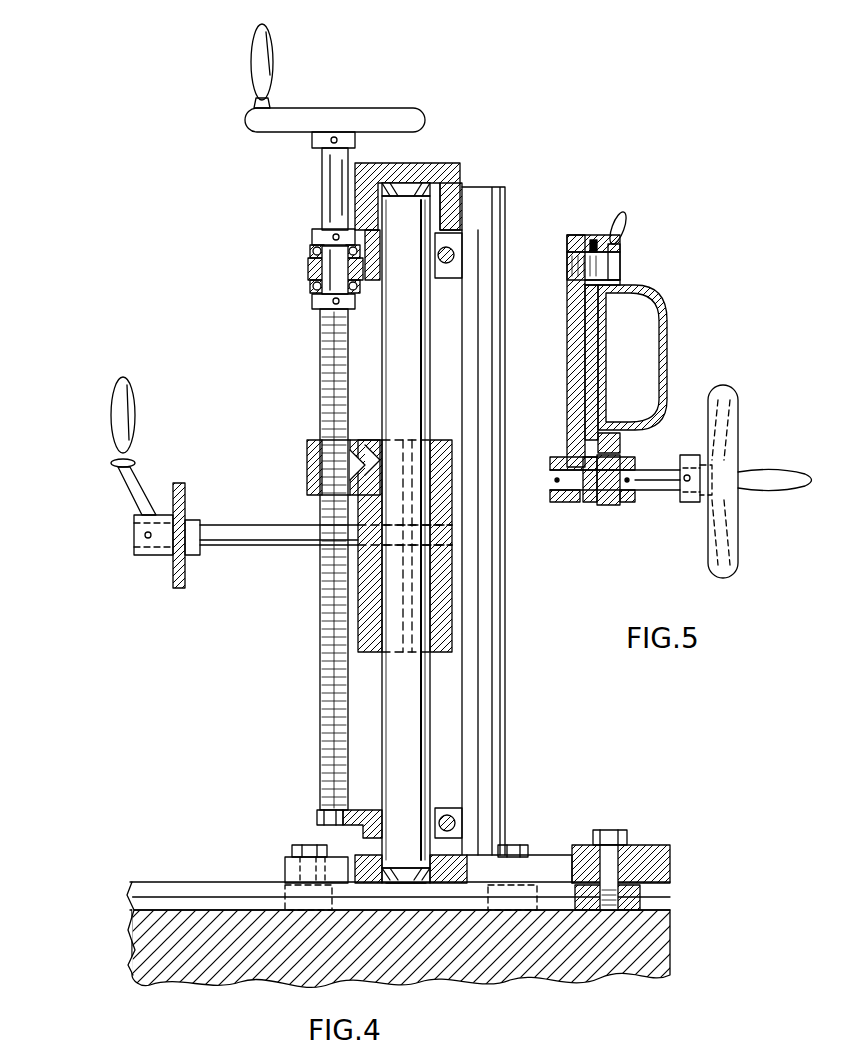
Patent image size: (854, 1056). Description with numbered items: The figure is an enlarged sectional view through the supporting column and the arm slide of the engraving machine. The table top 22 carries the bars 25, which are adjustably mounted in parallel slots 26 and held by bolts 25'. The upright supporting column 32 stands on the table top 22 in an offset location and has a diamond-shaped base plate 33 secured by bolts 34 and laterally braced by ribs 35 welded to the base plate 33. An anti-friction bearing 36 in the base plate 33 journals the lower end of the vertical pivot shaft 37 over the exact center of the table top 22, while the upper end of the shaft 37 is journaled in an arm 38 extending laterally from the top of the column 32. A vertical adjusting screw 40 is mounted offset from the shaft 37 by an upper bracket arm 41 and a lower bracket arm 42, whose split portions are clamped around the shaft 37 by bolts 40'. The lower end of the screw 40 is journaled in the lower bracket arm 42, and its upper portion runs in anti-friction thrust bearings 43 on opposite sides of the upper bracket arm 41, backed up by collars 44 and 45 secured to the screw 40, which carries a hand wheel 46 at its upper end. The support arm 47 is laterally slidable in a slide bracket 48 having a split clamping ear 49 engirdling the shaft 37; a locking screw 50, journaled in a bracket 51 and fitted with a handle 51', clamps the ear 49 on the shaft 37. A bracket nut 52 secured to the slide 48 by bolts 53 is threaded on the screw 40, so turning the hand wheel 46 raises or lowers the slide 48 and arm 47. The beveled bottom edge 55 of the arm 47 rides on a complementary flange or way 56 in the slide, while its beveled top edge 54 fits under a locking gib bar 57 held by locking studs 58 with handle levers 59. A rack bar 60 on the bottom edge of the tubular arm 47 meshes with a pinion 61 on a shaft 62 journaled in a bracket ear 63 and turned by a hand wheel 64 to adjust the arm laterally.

In FIG. 4, the table top 22 is at (135, 945).
In FIG. 4, the bars 25 is at (626, 864).
In FIG. 4, the bolts 25' is at (622, 821).
In FIG. 4, the parallel slots 26 is at (552, 882).
In FIG. 4, the upright supporting column 32 is at (497, 727).
In FIG. 4, the diamond-shaped base plate 33 is at (285, 865).
In FIG. 4, the bolts 34 is at (296, 847).
In FIG. 4, the ribs 35 is at (375, 812).
In FIG. 4, the anti-friction bearing 36 is at (430, 183).
In FIG. 4, the vertical pivot shaft 37 is at (425, 702).
In FIG. 4, the arm 38 is at (462, 196).
In FIG. 4, the vertical adjusting screw 40 is at (308, 559).
In FIG. 4, the bolts 40' is at (456, 535).
In FIG. 4, the upper bracket arm 41 is at (308, 270).
In FIG. 4, the lower bracket arm 42 is at (318, 818).
In FIG. 4, the anti-friction thrust bearings 43 is at (310, 252).
In FIG. 4, the collar 44 is at (312, 235).
In FIG. 4, the collar 45 is at (312, 305).
In FIG. 4, the hand wheel 46 is at (352, 110).
In FIG. 5, the support arm 47 is at (676, 343).
In FIG. 5, the slide bracket 48 is at (580, 236).
In FIG. 4, the split clamping ear 49 is at (452, 614).
In FIG. 4, the locking screw 50 is at (293, 545).
In FIG. 4, the bracket 51 is at (181, 527).
In FIG. 4, the handle 51' is at (109, 446).
In FIG. 4, the bracket nut 52 is at (307, 447).
In FIG. 4, the bolts 53 is at (372, 455).
In FIG. 5, the top edge 54 is at (588, 288).
In FIG. 5, the bottom edge 55 is at (588, 457).
In FIG. 5, the flange or way 56 is at (591, 503).
In FIG. 5, the locking gib bar 57 is at (595, 239).
In FIG. 5, the locking studs 58 is at (567, 268).
In FIG. 5, the handle levers 59 is at (626, 234).
In FIG. 5, the rack bar 60 is at (620, 447).
In FIG. 5, the pinion 61 is at (616, 506).
In FIG. 5, the shaft 62 is at (665, 490).
In FIG. 5, the bracket ear 63 is at (566, 502).
In FIG. 5, the hand wheel 64 is at (740, 545).